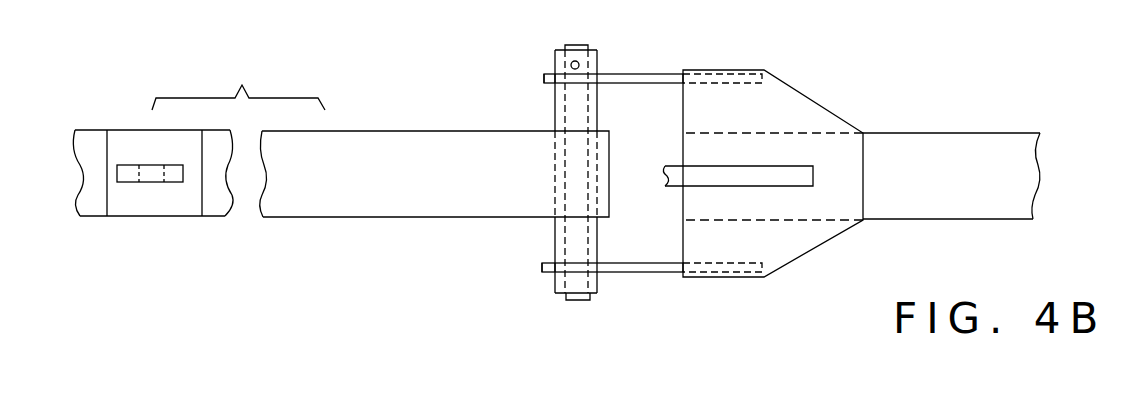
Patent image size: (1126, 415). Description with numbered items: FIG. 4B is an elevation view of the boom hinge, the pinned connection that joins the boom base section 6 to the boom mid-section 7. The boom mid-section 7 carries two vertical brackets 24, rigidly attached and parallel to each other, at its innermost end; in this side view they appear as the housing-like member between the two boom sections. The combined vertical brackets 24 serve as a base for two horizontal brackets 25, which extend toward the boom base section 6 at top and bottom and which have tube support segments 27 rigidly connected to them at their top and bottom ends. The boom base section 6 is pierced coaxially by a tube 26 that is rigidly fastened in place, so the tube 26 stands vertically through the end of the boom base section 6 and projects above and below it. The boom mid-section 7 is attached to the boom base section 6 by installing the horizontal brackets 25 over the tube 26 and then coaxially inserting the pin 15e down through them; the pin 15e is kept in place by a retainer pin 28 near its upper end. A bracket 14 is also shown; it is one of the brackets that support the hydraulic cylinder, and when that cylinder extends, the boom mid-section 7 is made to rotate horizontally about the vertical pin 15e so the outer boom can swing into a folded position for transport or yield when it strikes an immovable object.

The boom base section 6 is at (432, 184).
The boom mid-section 7 is at (950, 184).
The bracket 14 is at (143, 159).
The pin 15e is at (590, 44).
The vertical bracket 24 is at (755, 122).
The horizontal bracket 25 is at (634, 74).
The tube 26 is at (557, 118).
The support segment 27 is at (555, 64).
The retainer pin 28 is at (580, 64).